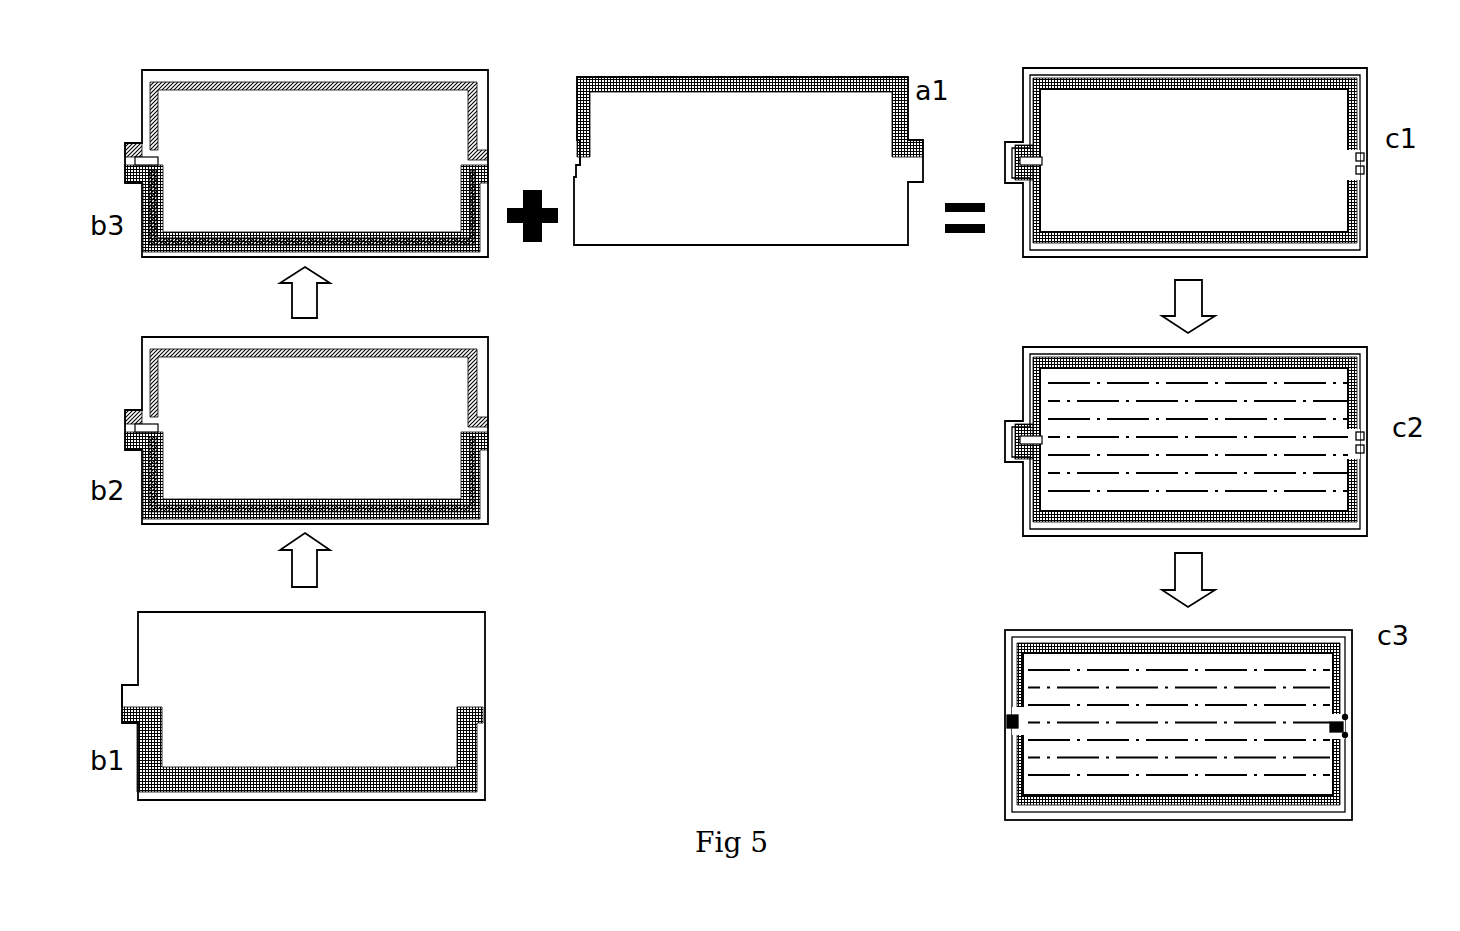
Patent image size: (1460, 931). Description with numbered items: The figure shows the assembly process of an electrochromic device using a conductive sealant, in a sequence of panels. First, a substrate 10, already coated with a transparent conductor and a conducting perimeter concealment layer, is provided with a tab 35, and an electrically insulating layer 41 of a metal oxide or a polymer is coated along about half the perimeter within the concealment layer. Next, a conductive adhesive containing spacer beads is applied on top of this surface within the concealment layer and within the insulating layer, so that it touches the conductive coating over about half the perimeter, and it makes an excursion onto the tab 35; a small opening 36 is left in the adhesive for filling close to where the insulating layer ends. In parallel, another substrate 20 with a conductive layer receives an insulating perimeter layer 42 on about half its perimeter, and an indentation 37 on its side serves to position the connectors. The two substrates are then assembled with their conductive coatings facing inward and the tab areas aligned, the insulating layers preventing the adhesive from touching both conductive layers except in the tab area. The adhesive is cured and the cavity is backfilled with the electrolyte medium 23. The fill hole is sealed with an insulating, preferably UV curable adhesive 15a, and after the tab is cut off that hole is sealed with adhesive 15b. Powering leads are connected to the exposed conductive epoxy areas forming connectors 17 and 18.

The substrate 10 is at (420, 650).
The substrate 20 is at (715, 215).
The EC medium 23 is at (1258, 395).
The tab 35 is at (128, 697).
The opening 36 is at (488, 165).
The indentation 37 is at (577, 166).
The electrically insulating layer 41 is at (470, 742).
The insulating perimeter layer 42 is at (773, 77).
The adhesive 15a is at (1350, 727).
The adhesive 15b is at (1007, 725).
The connector 17 is at (1347, 717).
The connector 18 is at (1348, 735).